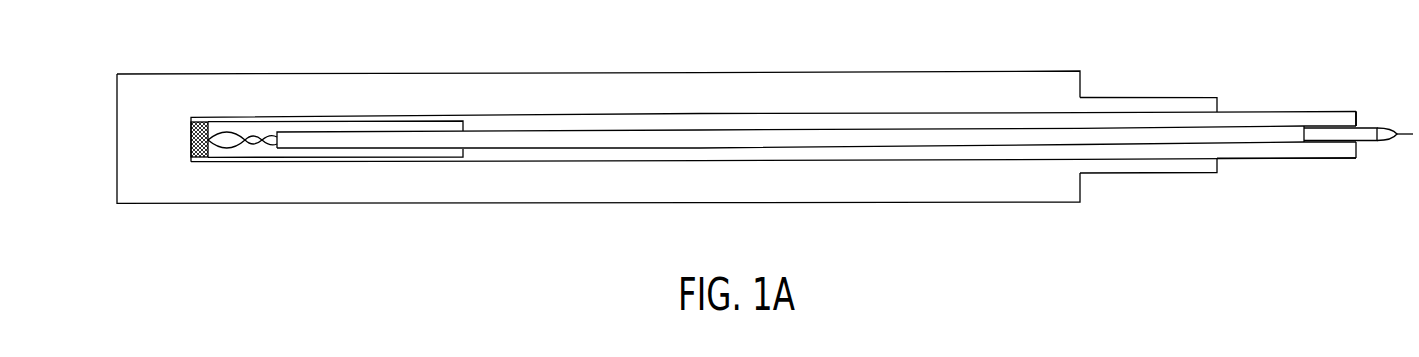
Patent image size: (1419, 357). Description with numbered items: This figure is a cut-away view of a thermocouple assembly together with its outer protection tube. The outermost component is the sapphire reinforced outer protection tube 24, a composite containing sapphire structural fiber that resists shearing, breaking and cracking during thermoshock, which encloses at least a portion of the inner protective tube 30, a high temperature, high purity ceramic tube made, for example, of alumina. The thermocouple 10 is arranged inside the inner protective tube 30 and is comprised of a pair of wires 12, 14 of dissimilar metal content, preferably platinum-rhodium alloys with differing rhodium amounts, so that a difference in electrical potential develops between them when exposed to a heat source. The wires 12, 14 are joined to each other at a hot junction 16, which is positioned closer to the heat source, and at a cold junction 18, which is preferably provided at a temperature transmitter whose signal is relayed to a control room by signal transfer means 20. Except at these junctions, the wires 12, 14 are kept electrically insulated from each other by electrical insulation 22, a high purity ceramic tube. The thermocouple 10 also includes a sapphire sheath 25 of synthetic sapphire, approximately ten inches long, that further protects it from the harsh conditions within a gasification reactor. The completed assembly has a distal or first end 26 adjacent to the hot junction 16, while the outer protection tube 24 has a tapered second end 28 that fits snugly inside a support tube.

The thermocouple 10 is at (816, 78).
The wire 12 is at (1334, 86).
The wire 14 is at (1339, 171).
The hot junction 16 is at (239, 193).
The cold junction 18 is at (1370, 187).
The signal transfer means 20 is at (1384, 89).
The electrical insulation 22 is at (773, 189).
The outer protection tube 24 is at (598, 53).
The sapphire sheath 25 is at (773, 81).
The distal or first end 26 is at (588, 164).
The second end 28 is at (1166, 108).
The inner protective tube 30 is at (1277, 205).